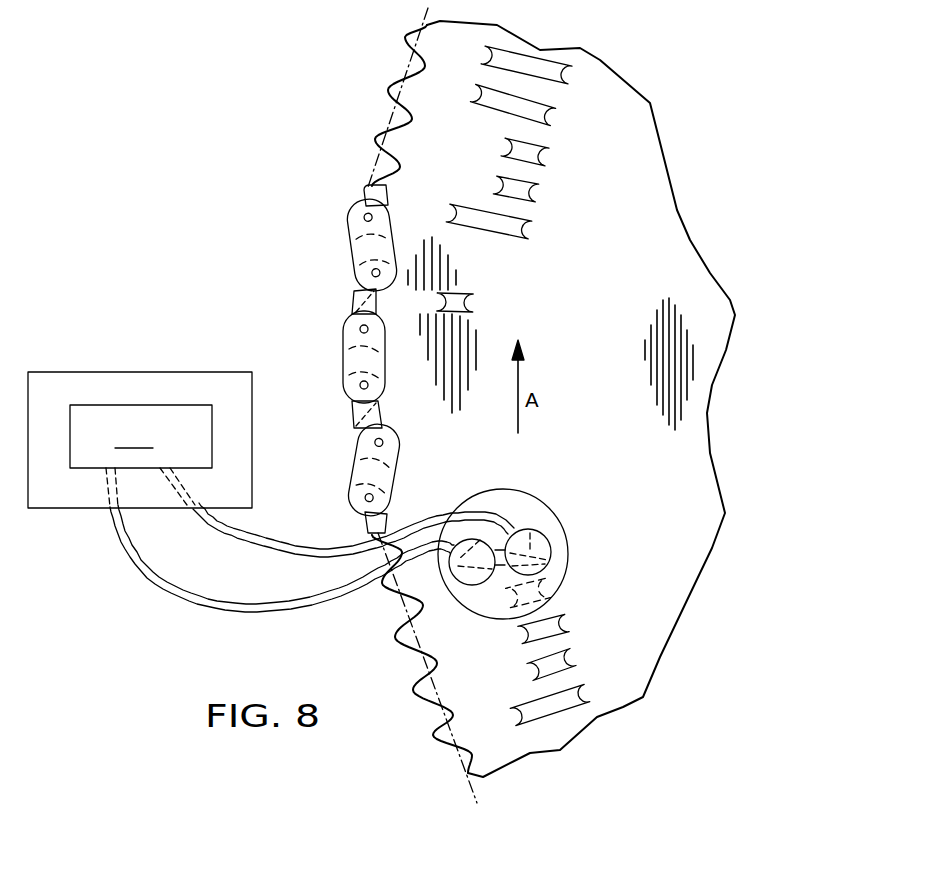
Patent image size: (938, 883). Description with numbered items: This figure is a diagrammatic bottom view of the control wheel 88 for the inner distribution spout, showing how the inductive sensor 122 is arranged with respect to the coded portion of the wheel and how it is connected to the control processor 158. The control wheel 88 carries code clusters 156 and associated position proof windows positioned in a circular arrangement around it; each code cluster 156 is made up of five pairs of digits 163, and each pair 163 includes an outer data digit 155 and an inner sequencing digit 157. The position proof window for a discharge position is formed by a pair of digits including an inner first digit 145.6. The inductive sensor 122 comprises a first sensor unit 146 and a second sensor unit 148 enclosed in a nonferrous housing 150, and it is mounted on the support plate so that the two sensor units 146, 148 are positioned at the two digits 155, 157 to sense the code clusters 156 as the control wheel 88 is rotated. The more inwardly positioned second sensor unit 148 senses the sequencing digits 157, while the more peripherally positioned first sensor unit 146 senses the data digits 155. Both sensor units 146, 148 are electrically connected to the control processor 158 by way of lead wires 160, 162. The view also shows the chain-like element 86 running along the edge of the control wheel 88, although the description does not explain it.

The control wheel 88 is at (665, 297).
The pairs of digits 163 is at (553, 153).
The code clusters 156 is at (547, 177).
The link chain 86 is at (347, 262).
The inner first digit 145.6 is at (430, 297).
The control processor 158 is at (140, 440).
The lead wire 160 is at (263, 540).
The lead wire 162 is at (222, 602).
The inductive sensor 122 is at (507, 614).
The nonferrous housing 150 is at (565, 539).
The second sensor unit 148 is at (545, 530).
The outer data digit 155 is at (472, 536).
The inner sequencing digit 157 is at (529, 530).
The first sensor unit 146 is at (437, 603).